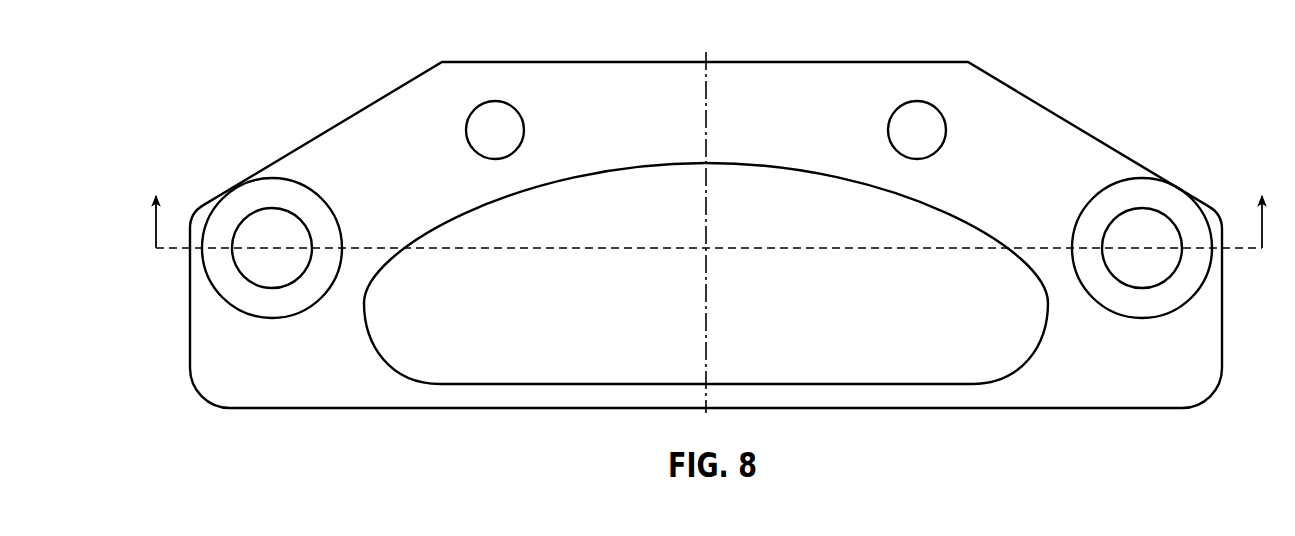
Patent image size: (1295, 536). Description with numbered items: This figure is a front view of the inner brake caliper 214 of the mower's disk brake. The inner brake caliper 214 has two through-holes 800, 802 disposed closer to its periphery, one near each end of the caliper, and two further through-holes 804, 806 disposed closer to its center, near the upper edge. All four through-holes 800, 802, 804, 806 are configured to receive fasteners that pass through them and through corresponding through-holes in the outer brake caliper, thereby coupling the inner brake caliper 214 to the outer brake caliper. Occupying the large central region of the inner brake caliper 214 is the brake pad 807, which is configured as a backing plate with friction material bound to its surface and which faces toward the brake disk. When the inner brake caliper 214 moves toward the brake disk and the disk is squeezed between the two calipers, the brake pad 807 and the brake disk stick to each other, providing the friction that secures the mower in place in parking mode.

The inner brake caliper 214 is at (255, 73).
The through-hole 800 is at (243, 236).
The through-hole 802 is at (1154, 206).
The through-hole 804 is at (480, 118).
The through-hole 806 is at (919, 118).
The brake pad 807 is at (638, 163).